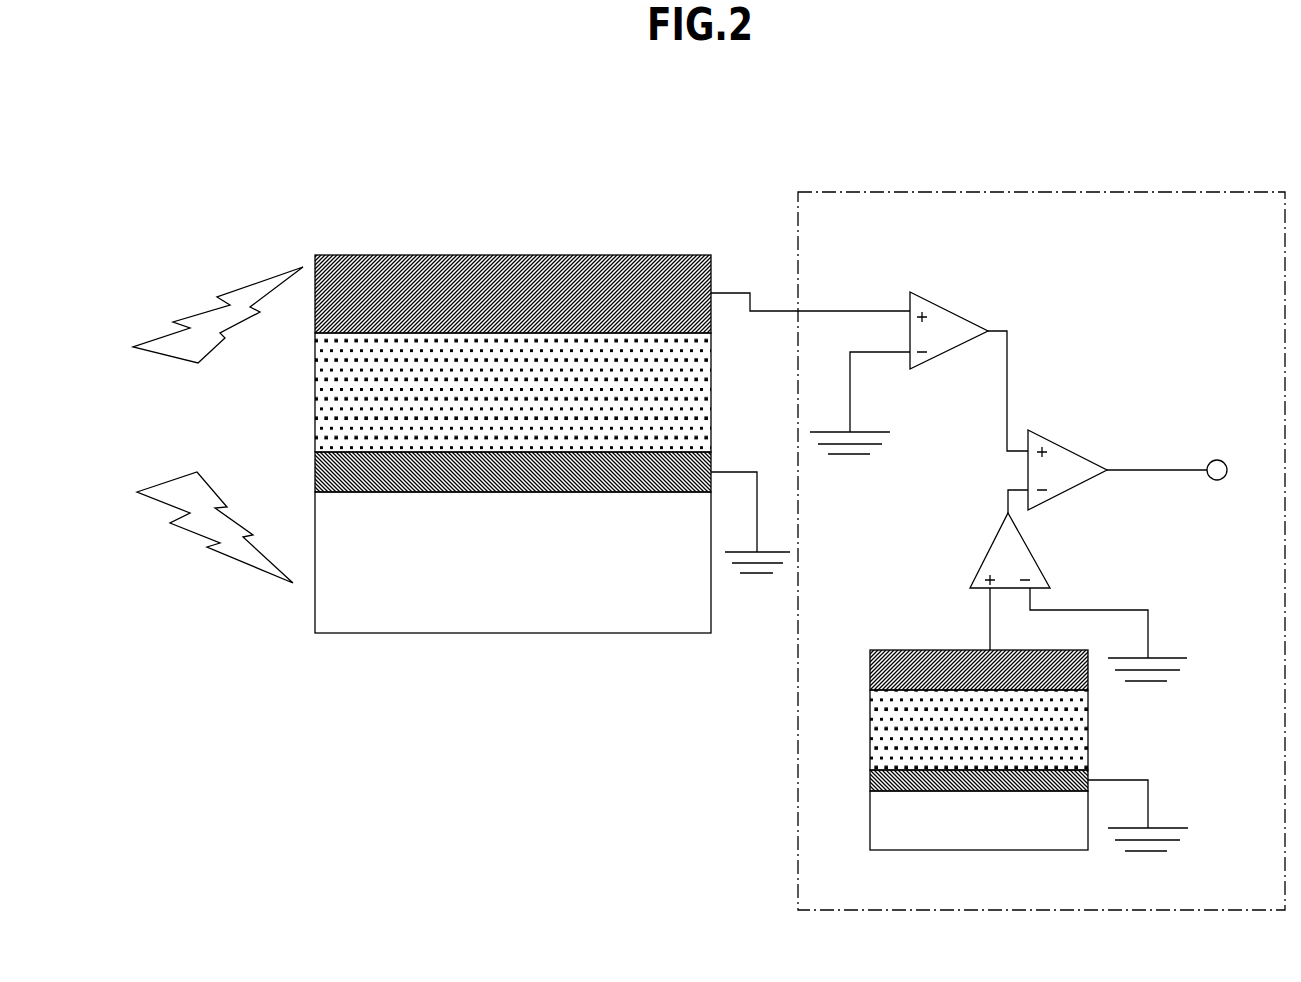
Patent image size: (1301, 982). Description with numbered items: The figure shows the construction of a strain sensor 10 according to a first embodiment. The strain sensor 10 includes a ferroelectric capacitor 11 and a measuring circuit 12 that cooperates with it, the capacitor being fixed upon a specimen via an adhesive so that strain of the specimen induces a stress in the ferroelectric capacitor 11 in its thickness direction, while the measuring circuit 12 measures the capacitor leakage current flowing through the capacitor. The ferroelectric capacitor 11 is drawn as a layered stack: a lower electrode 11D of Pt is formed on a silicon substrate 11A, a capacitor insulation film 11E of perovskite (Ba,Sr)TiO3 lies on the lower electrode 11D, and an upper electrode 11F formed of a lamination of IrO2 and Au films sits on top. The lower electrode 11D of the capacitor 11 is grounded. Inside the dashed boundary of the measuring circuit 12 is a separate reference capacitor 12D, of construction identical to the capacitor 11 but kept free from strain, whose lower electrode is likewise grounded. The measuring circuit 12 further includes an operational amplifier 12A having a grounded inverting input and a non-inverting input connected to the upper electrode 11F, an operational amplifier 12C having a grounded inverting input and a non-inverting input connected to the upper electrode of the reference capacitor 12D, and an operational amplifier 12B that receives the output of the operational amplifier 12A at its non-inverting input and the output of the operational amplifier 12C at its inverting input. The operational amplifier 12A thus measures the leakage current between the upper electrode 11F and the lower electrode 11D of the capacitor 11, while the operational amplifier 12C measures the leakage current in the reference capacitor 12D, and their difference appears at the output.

The strain sensor 10 is at (772, 77).
The ferroelectric capacitor 11 is at (518, 224).
The upper electrode 11F is at (610, 253).
The capacitor insulation film 11E is at (314, 403).
The lower electrode 11D is at (437, 492).
The silicon substrate 11A is at (579, 620).
The measuring circuit 12 is at (1152, 192).
The operational amplifier 12A is at (953, 310).
The operational amplifier 12B is at (1055, 438).
The operational amplifier 12C is at (1030, 553).
The reference capacitor 12D is at (904, 624).